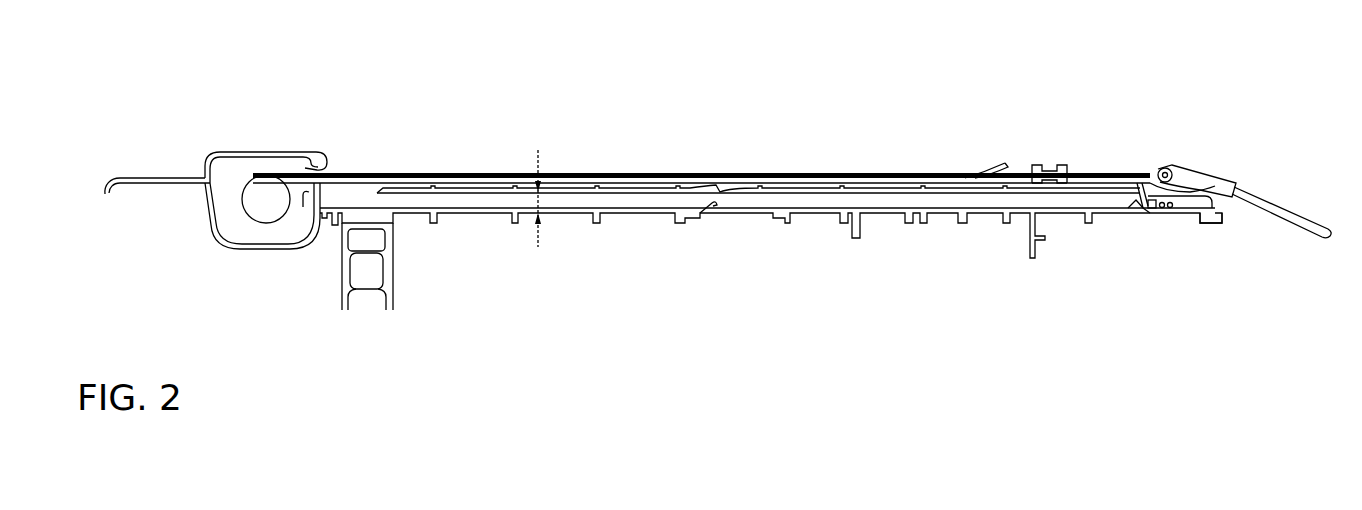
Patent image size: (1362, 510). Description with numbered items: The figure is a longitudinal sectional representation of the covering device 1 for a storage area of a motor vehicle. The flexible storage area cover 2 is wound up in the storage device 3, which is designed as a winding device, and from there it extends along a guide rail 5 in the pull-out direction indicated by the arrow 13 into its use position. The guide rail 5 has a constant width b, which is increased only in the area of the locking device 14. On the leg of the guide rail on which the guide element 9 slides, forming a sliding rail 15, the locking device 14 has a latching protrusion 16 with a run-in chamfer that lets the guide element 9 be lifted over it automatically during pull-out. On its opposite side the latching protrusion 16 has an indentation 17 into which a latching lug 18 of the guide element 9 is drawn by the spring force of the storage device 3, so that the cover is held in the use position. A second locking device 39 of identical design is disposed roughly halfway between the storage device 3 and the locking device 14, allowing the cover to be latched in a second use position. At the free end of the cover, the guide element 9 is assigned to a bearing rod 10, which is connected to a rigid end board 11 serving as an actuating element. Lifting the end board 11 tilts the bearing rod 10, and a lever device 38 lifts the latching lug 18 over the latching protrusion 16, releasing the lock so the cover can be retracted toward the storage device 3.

The covering device 1 is at (323, 107).
The storage area cover 2 is at (593, 175).
The storage device 3 is at (213, 223).
The guide rail 5 is at (468, 202).
The width b is at (538, 234).
The second locking device 39 is at (709, 226).
The sliding rail 15 is at (828, 210).
The arrow 13 is at (1090, 128).
The latching lug 18 is at (1140, 198).
The bearing rod 10 is at (1165, 175).
The end board 11 is at (1272, 213).
The guide element 9 is at (1173, 208).
The latching protrusion 16 is at (1132, 209).
The indentation 17 is at (1145, 216).
The lever device 38 is at (1198, 222).
The locking device 14 is at (1163, 285).